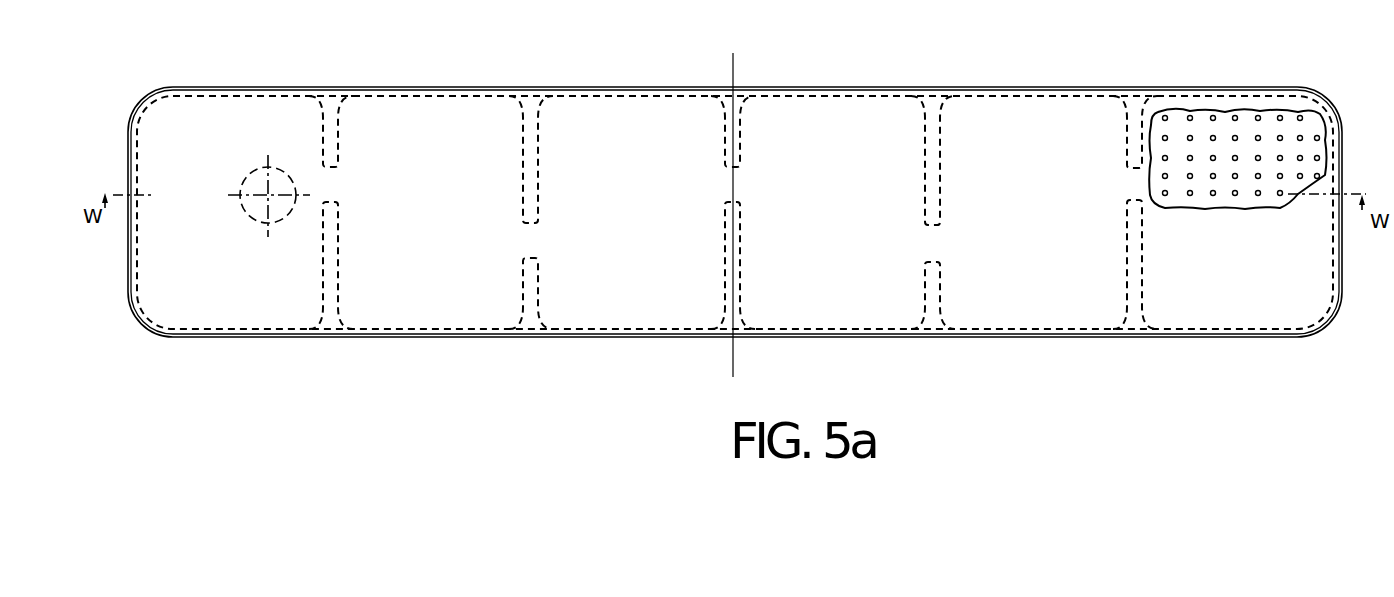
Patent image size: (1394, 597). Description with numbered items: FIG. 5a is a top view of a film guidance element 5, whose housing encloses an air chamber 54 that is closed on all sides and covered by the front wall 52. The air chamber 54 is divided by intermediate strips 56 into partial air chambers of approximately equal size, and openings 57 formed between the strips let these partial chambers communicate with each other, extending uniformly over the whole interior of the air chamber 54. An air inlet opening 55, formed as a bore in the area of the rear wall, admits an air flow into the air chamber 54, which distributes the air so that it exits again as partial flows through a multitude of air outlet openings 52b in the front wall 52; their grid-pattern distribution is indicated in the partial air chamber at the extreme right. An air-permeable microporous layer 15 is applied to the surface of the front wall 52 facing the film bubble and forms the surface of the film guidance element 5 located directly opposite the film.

The film guidance element 5 is at (991, 75).
The air chamber 54 is at (424, 220).
The intermediate strips 56 is at (340, 280).
The openings 57 is at (330, 185).
The front wall 52 is at (529, 96).
The microporous layer 15 is at (934, 215).
The air inlet opening 55 is at (262, 221).
The air outlet openings 52b is at (1235, 117).